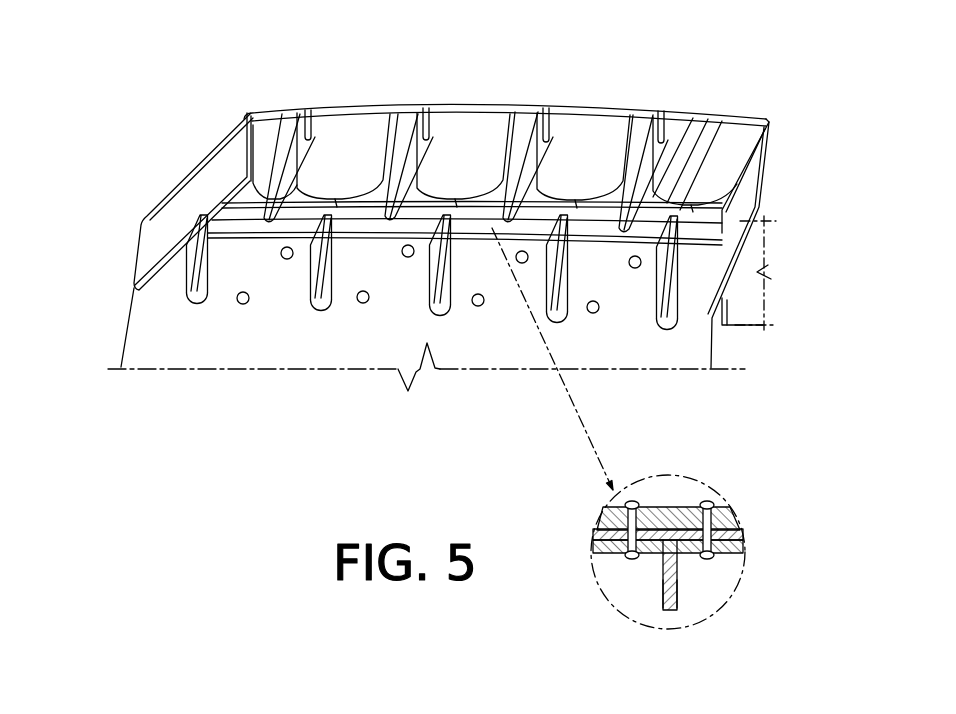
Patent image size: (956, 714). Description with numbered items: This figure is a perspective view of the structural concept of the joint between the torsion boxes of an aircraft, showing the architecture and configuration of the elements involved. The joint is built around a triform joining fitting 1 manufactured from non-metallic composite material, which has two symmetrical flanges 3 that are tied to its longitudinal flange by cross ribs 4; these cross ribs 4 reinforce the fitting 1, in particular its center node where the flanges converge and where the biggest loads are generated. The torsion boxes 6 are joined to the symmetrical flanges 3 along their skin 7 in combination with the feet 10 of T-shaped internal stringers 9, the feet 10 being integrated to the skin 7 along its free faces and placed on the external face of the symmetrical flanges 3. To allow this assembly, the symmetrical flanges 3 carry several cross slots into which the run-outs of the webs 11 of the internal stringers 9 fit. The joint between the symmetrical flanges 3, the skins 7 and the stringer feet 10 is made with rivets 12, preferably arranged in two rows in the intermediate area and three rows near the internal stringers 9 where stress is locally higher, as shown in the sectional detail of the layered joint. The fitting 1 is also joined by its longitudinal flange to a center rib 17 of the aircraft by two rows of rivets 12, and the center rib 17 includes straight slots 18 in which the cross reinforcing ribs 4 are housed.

The triform joining fitting 1 is at (495, 193).
The symmetrical flanges 3 is at (433, 210).
The cross ribs 4 is at (195, 302).
The torsion boxes 6 is at (267, 103).
The skin 7 is at (623, 110).
The internal stringers 9 is at (410, 158).
The feet 10 is at (742, 535).
The webs 11 is at (663, 580).
The rivets 12 is at (476, 306).
The center rib 17 is at (253, 358).
The straight slots 18 is at (314, 302).